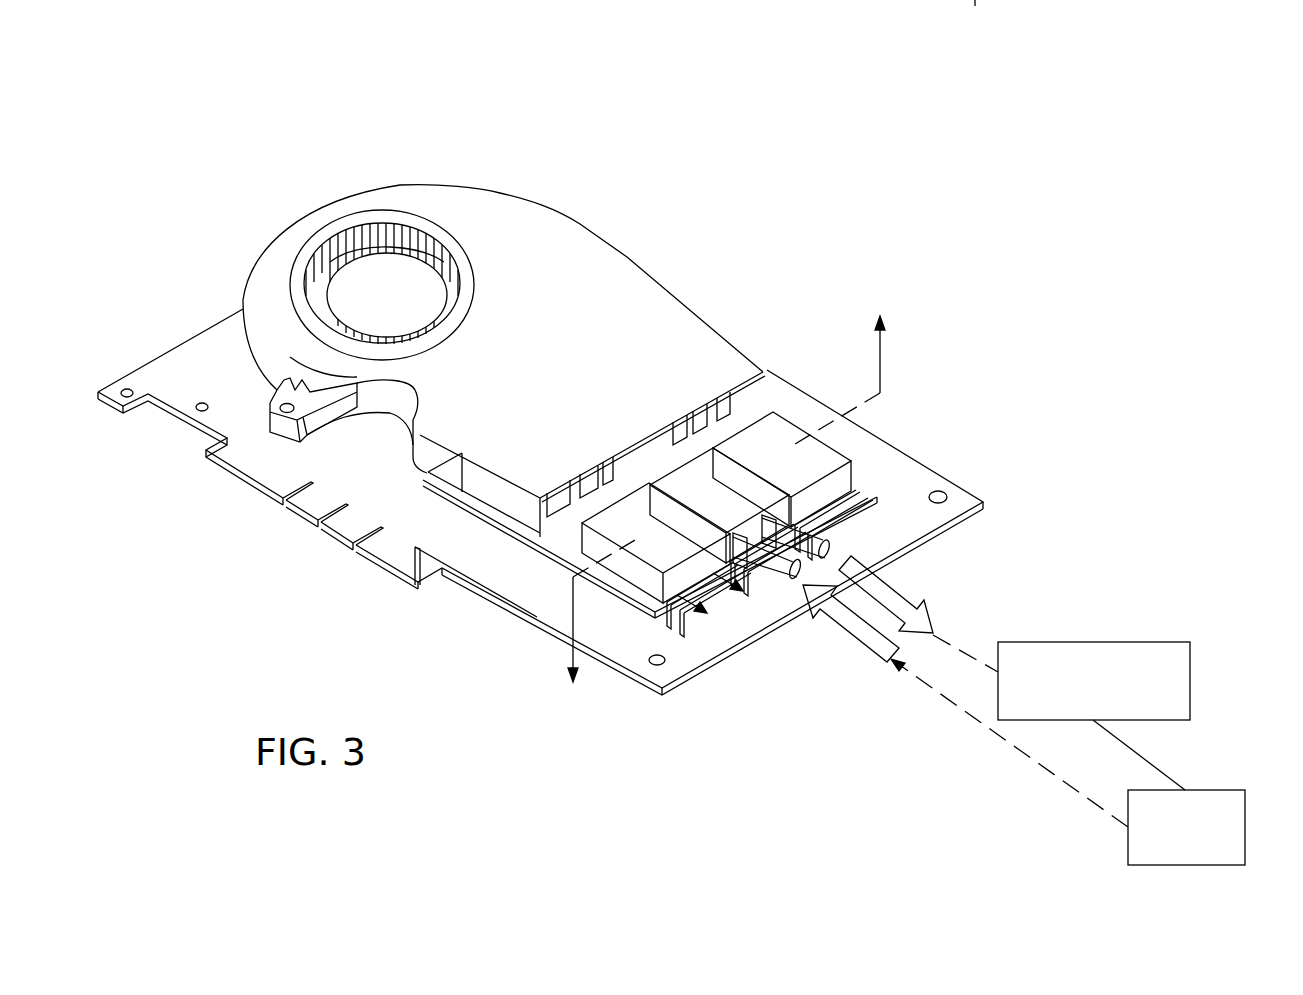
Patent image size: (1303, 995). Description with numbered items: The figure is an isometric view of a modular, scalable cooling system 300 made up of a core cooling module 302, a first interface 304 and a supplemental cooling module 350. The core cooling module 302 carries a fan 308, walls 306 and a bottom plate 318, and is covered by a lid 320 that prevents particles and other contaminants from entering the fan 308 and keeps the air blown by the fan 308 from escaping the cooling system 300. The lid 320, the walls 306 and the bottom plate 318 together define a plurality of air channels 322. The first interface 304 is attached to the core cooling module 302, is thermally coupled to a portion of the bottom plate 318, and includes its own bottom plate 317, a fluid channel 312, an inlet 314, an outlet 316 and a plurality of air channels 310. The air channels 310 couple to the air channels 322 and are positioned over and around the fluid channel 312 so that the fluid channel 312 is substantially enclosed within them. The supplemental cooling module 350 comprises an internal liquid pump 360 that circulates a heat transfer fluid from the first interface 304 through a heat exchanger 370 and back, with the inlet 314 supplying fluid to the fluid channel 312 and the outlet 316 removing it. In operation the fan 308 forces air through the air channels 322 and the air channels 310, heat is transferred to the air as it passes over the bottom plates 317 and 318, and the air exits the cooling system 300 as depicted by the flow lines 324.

The cooling system 300 is at (272, 135).
The core cooling module 302 is at (665, 212).
The first interface 304 is at (914, 406).
The walls 306 is at (750, 407).
The fan 308 is at (430, 240).
The air channels 310 is at (838, 457).
The fluid channel 312 is at (738, 568).
The inlet 314 is at (793, 572).
The outlet 316 is at (832, 548).
The bottom plate 317 is at (690, 605).
The bottom plate 318 is at (443, 480).
The lid 320 is at (580, 347).
The air channels 322 is at (548, 517).
The flow lines 324 is at (730, 588).
The supplemental cooling module 350 is at (1183, 550).
The liquid pump 360 is at (1218, 790).
The heat exchanger 370 is at (1043, 642).